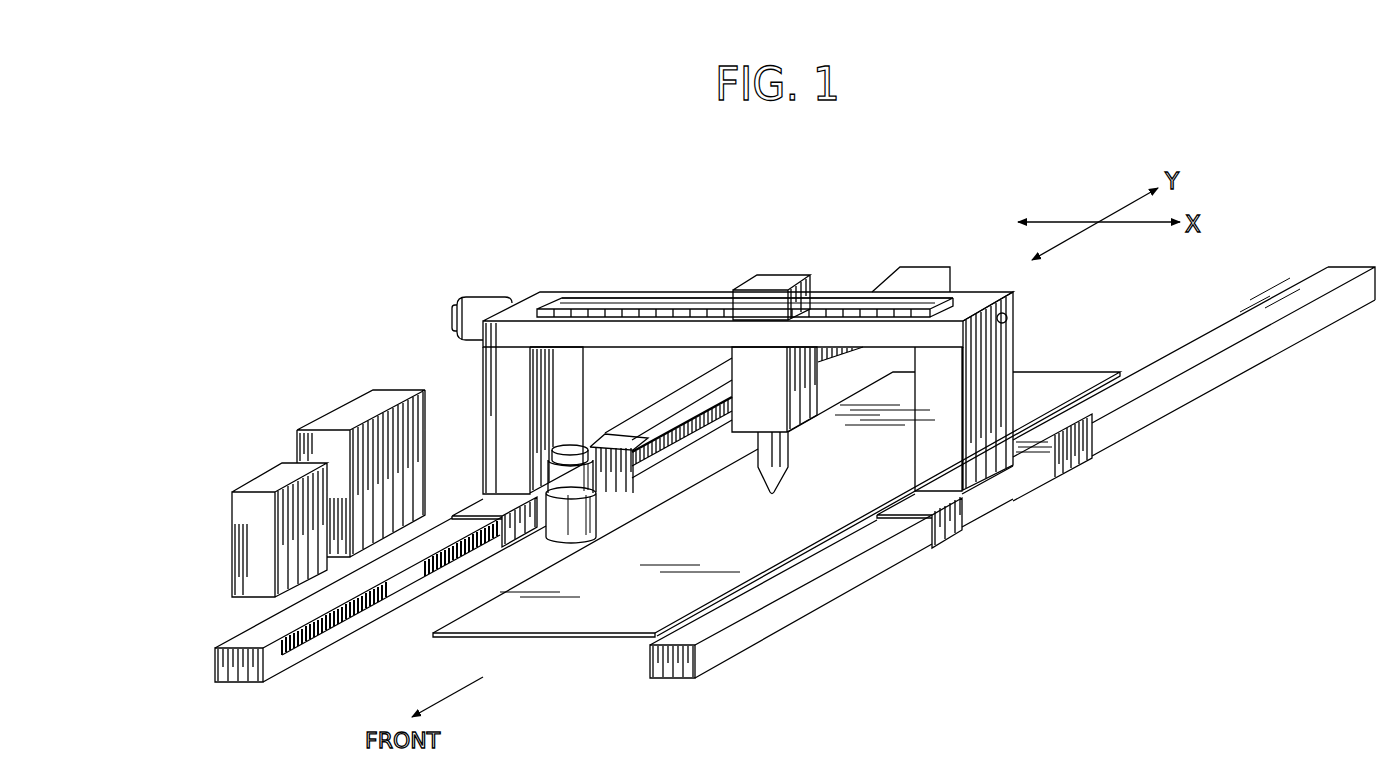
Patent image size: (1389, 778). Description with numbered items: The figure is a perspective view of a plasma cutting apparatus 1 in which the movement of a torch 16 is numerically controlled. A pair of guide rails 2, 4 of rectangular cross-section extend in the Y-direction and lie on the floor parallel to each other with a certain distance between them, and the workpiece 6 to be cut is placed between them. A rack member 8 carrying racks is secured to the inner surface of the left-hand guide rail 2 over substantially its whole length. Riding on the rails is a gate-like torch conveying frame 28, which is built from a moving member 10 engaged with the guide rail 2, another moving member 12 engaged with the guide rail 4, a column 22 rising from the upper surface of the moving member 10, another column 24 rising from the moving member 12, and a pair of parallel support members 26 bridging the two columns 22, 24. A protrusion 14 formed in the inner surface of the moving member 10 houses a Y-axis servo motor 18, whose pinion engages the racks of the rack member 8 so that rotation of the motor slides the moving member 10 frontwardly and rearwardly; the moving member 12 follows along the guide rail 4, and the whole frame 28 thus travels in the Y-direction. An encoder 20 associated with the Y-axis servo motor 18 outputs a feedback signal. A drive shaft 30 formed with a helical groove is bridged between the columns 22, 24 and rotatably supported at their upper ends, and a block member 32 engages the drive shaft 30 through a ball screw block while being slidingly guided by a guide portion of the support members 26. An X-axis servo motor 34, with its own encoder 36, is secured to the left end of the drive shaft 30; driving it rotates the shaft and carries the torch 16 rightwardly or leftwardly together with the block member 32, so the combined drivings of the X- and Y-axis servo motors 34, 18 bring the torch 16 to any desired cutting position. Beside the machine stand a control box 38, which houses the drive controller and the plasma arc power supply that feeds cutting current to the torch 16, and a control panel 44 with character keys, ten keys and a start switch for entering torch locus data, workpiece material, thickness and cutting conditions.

The plasma cutting apparatus 1 is at (868, 220).
The guide rail 2 is at (242, 680).
The guide rail 4 is at (1203, 397).
The workpiece 6 is at (528, 620).
The rack member 8 is at (373, 610).
The moving member 10 is at (473, 500).
The moving member 12 is at (1037, 487).
The protrusion 14 is at (580, 537).
The torch 16 is at (788, 440).
The Y-axis servo motor 18 is at (593, 493).
The encoder 20 is at (572, 447).
The column 22 is at (482, 375).
The column 24 is at (1015, 347).
The support members 26 is at (588, 308).
The torch conveying frame 28 is at (706, 287).
The drive shaft 30 is at (648, 308).
The block member 32 is at (777, 274).
The X-axis servo motor 34 is at (490, 295).
The encoder 36 is at (455, 310).
The control box 38 is at (340, 405).
The control panel 44 is at (258, 475).